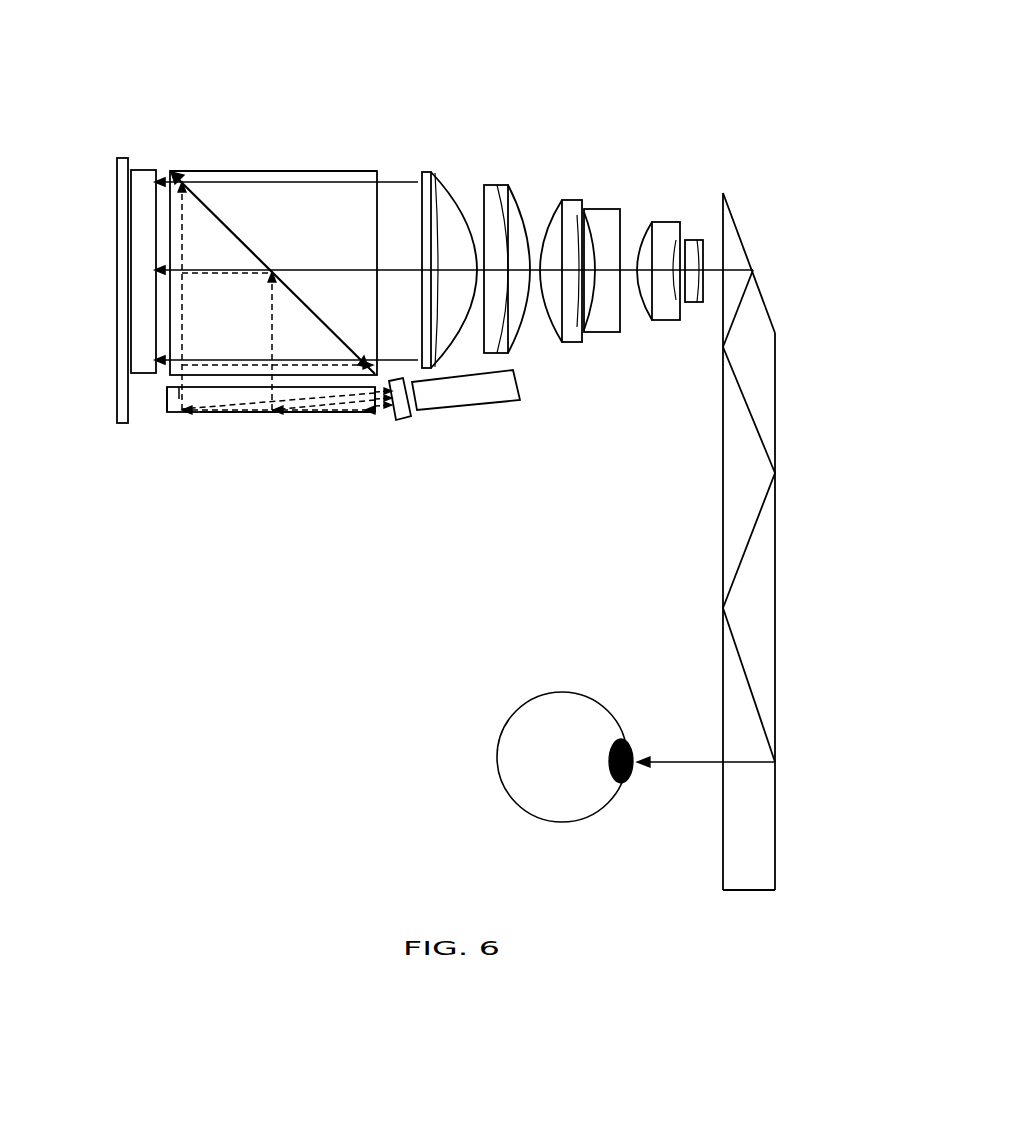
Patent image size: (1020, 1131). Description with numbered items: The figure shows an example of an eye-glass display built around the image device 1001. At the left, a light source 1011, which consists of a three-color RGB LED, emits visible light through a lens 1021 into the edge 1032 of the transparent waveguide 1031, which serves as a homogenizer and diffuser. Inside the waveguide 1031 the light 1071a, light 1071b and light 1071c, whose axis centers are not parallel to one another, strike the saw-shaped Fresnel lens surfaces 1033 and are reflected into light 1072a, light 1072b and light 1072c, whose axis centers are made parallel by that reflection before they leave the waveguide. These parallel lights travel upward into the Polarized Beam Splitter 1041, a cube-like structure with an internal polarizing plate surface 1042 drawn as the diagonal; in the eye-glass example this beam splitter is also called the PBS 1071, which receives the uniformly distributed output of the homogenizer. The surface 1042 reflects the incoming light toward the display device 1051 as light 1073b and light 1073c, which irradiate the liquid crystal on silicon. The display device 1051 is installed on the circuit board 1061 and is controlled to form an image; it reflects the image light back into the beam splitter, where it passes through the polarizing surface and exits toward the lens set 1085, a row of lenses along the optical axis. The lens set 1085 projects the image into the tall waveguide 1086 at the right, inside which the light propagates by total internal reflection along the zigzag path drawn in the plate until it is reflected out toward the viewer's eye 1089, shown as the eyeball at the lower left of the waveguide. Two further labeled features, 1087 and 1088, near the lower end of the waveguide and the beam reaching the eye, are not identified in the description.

The image device 1001 is at (243, 58).
The circuit board 1061 is at (117, 167).
The display device 1051 is at (143, 170).
The Polarized Beam Splitter 1041 is at (338, 238).
The internal polarizing plate surface 1042 is at (295, 290).
The PBS 1071 is at (361, 171).
The light 1071a is at (247, 413).
The light 1071b is at (317, 413).
The light 1071c is at (382, 407).
The light 1072a is at (179, 399).
The light 1072b is at (272, 328).
The light 1072c is at (360, 415).
The light 1073b is at (218, 272).
The light 1073c is at (203, 155).
The transparent waveguide 1031 is at (173, 413).
The edge of the waveguide 1032 is at (383, 413).
The Fresnel lens surfaces 1033 is at (261, 413).
The lens 1021 is at (404, 418).
The light source 1011 is at (487, 403).
The lens set 1085 is at (572, 197).
The waveguide 1086 is at (757, 352).
The exit reflecting surface 1087 is at (752, 693).
The exit light 1088 is at (695, 760).
The viewer's eye 1089 is at (558, 723).